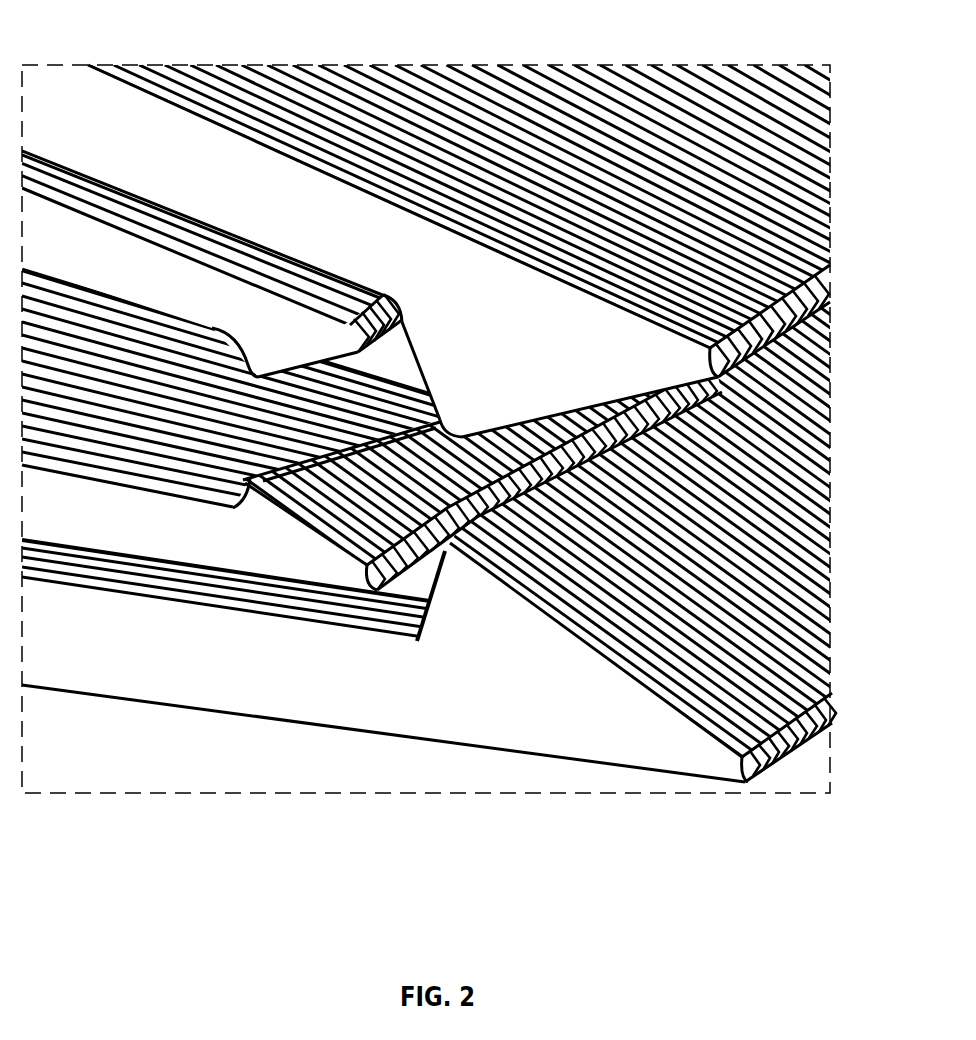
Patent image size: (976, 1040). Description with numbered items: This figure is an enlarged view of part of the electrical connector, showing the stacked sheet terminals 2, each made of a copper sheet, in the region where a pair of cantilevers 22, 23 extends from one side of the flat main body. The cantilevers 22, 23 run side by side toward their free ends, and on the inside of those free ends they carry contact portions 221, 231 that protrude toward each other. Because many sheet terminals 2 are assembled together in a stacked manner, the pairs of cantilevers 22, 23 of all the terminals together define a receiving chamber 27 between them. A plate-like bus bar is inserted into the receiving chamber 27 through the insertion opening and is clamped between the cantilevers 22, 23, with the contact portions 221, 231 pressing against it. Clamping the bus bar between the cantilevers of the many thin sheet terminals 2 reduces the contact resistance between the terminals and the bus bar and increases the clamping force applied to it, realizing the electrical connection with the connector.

The sheet terminal 2 is at (712, 355).
The cantilever 22 is at (335, 235).
The cantilever 23 is at (175, 270).
The receiving chamber 27 is at (75, 320).
The contact portion 221 is at (470, 577).
The contact portion 231 is at (253, 500).